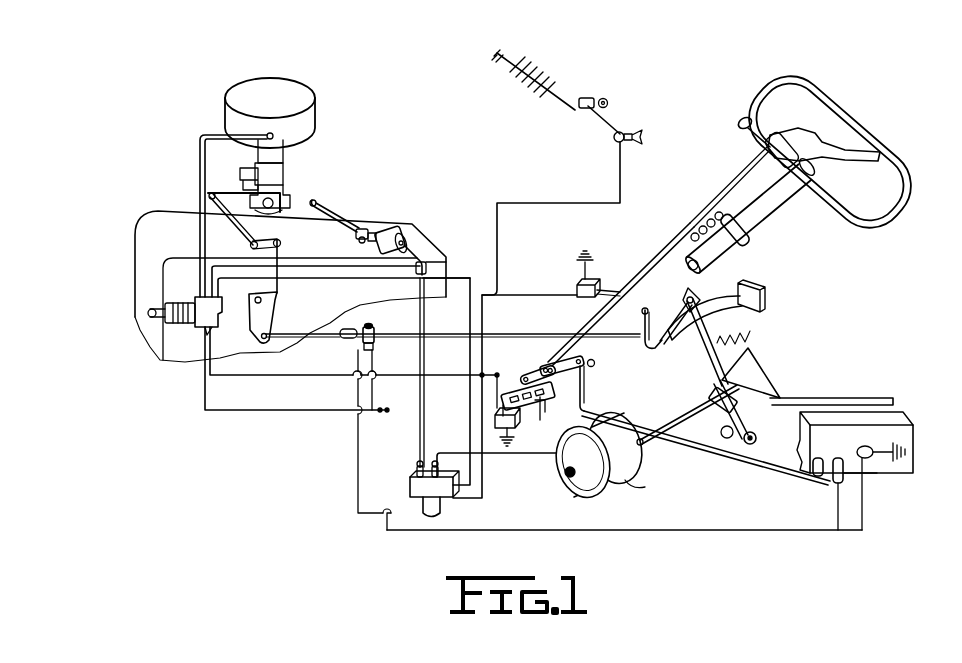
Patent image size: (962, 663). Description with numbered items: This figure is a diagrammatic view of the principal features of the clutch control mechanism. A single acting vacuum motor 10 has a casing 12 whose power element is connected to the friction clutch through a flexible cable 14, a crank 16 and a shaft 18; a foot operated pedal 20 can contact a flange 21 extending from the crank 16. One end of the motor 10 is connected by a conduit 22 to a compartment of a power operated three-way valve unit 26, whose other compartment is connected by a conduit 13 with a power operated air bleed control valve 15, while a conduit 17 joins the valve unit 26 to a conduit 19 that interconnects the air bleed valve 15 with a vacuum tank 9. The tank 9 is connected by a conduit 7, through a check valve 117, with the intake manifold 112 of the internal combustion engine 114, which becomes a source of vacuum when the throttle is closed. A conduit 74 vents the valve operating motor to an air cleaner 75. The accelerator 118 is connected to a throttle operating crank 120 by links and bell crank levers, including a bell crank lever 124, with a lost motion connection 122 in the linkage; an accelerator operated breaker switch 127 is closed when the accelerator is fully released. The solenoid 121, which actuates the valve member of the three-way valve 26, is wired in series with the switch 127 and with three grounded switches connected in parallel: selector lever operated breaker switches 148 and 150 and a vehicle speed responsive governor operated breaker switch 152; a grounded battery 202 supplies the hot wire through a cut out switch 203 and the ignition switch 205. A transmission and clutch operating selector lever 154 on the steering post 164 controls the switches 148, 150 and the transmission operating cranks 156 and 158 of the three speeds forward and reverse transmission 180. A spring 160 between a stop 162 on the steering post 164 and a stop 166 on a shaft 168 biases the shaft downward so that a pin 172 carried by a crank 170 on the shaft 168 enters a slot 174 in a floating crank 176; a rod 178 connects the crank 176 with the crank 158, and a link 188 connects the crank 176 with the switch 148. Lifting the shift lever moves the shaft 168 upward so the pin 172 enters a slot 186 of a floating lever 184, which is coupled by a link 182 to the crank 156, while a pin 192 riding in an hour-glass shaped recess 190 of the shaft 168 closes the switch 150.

The conduit 7 is at (330, 207).
The vacuum tank 9 is at (400, 236).
The single acting vacuum motor 10 is at (668, 495).
The casing 12 is at (580, 487).
The conduit 13 is at (463, 278).
The flexible cable 14 is at (690, 400).
The power operated air bleed control valve 15 is at (200, 327).
The crank 16 is at (745, 416).
The conduit 17 is at (418, 424).
The shaft 18 is at (757, 439).
The conduit 19 is at (320, 266).
The foot operated pedal 20 is at (760, 301).
The flange 21 is at (715, 424).
The conduit 22 is at (513, 455).
The power operated three-way valve unit 26 is at (452, 507).
The conduit 74 is at (200, 170).
The air cleaner 75 is at (288, 90).
The intake manifold 112 is at (362, 228).
The internal combustion engine 114 is at (140, 272).
The check valve 117 is at (368, 226).
The accelerator 118 is at (704, 290).
The throttle operating crank 120 is at (278, 200).
The solenoid 121 is at (430, 513).
The lost motion connection 122 is at (352, 328).
The bell crank lever 124 is at (268, 310).
The accelerator operated breaker switch 127 is at (375, 352).
The selector lever operated breaker switch 148 is at (497, 425).
The selector lever operated breaker switch 150 is at (580, 287).
The vehicle speed responsive governor operated breaker switch 152 is at (872, 462).
The transmission and clutch operating selector lever 154 is at (740, 132).
The transmission operating crank 156 is at (845, 447).
The transmission operating crank 158 is at (840, 485).
The spring 160 is at (697, 232).
The stop 162 is at (724, 208).
The steering post 164 is at (782, 205).
The stop 166 is at (683, 243).
The shaft 168 is at (655, 305).
The crank 170 is at (523, 372).
The pin 172 is at (583, 388).
The slot 174 is at (542, 412).
The floating crank 176 is at (508, 393).
The rod 178 is at (707, 450).
The transmission 180 is at (913, 437).
The link 182 is at (652, 433).
The floating lever 184 is at (594, 364).
The slot 186 is at (580, 362).
The link 188 is at (500, 403).
The hour-glass shaped recess portion 190 is at (622, 290).
The pin 192 is at (595, 298).
The grounded battery 202 is at (545, 63).
The cut out switch 203 is at (625, 130).
The ignition switch 205 is at (590, 93).